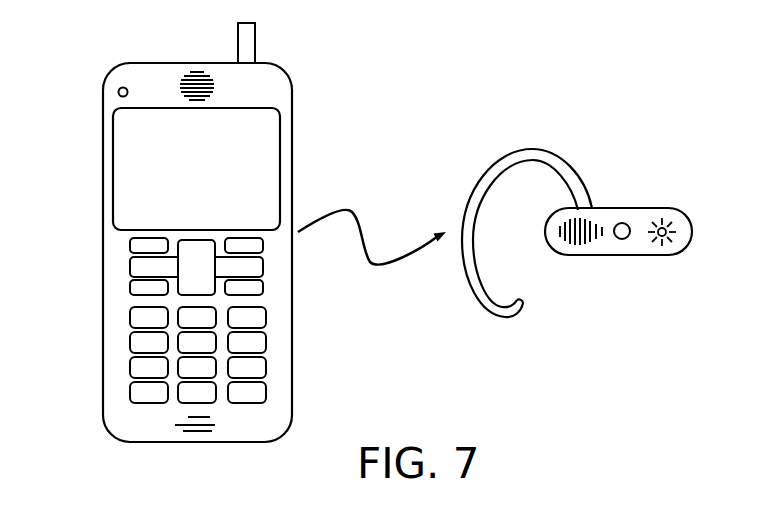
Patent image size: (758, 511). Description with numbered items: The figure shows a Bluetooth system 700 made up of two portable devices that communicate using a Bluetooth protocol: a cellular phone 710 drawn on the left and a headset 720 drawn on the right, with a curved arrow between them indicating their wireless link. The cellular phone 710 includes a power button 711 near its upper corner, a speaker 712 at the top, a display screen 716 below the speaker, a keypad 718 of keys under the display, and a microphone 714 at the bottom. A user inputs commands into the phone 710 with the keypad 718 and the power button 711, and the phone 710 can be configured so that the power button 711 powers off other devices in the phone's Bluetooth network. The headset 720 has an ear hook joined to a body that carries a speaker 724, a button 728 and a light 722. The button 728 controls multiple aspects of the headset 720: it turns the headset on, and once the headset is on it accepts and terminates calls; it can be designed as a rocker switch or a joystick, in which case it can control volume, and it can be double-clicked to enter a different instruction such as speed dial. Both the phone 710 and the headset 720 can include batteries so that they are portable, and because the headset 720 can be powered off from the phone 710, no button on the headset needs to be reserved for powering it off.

The Bluetooth system 700 is at (438, 92).
The cellular phone 710 is at (283, 73).
The power button 711 is at (118, 92).
The speaker 712 is at (180, 85).
The microphone 714 is at (215, 427).
The display screen 716 is at (262, 128).
The keypad 718 is at (266, 322).
The headset 720 is at (647, 208).
The light 722 is at (664, 237).
The speaker 724 is at (577, 243).
The button 728 is at (622, 223).